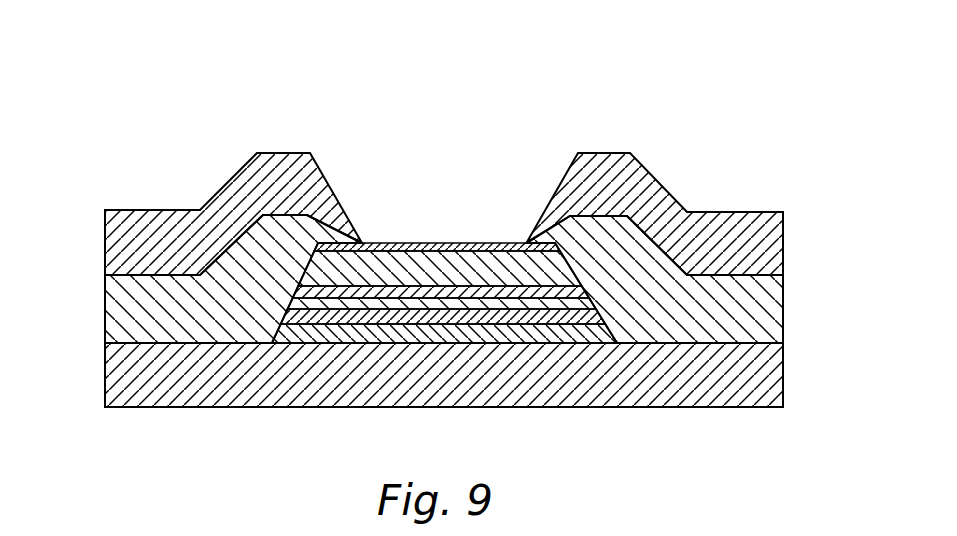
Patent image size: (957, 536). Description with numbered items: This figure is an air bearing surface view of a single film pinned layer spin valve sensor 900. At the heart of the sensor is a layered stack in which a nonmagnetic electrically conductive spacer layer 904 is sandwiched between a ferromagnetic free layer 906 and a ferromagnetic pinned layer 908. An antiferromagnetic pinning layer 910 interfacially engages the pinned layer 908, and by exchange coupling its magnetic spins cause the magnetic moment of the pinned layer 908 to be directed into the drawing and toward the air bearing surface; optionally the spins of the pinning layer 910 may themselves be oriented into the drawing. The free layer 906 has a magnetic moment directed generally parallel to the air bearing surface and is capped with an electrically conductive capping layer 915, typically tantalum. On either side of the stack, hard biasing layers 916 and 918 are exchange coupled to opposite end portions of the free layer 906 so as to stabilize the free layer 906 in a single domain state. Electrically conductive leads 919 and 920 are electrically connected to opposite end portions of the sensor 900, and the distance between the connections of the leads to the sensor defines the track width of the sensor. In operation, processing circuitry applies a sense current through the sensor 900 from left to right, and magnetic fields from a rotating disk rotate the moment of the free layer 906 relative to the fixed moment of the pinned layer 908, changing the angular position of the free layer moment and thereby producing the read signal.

The single film pinned layer spin valve sensor 900 is at (441, 244).
The nonmagnetic electrically conductive spacer layer 904 is at (590, 295).
The ferromagnetic free layer 906 is at (286, 324).
The ferromagnetic pinned layer 908 is at (615, 300).
The antiferromagnetic pinning layer 910 is at (307, 273).
The electrically conductive capping layer 915 is at (337, 247).
The hard biasing layer 916 is at (103, 310).
The hard biasing layer 918 is at (765, 312).
The electrically conductive lead 919 is at (330, 190).
The electrically conductive lead 920 is at (555, 190).